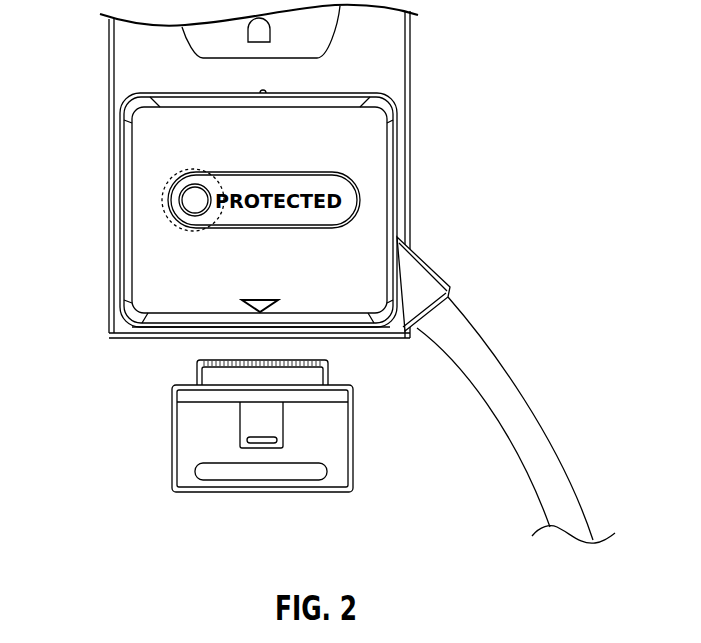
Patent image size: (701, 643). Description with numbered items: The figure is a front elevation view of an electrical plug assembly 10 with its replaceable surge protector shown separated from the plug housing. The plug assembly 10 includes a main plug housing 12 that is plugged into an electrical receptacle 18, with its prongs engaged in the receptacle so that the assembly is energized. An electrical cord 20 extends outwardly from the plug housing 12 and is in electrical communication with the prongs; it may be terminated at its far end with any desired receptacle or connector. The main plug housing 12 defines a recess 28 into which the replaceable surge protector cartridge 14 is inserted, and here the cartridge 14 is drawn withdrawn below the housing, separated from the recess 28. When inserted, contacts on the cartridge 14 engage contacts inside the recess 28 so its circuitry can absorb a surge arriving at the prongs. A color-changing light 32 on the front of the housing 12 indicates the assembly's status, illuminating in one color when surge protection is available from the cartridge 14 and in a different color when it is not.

The electrical plug assembly 10 is at (120, 101).
The main plug housing 12 is at (127, 268).
The replaceable surge protector cartridge 14 is at (171, 450).
The electrical receptacle 18 is at (383, 64).
The electrical cord 20 is at (526, 398).
The recess 28 is at (183, 334).
The color-changing light 32 is at (172, 197).